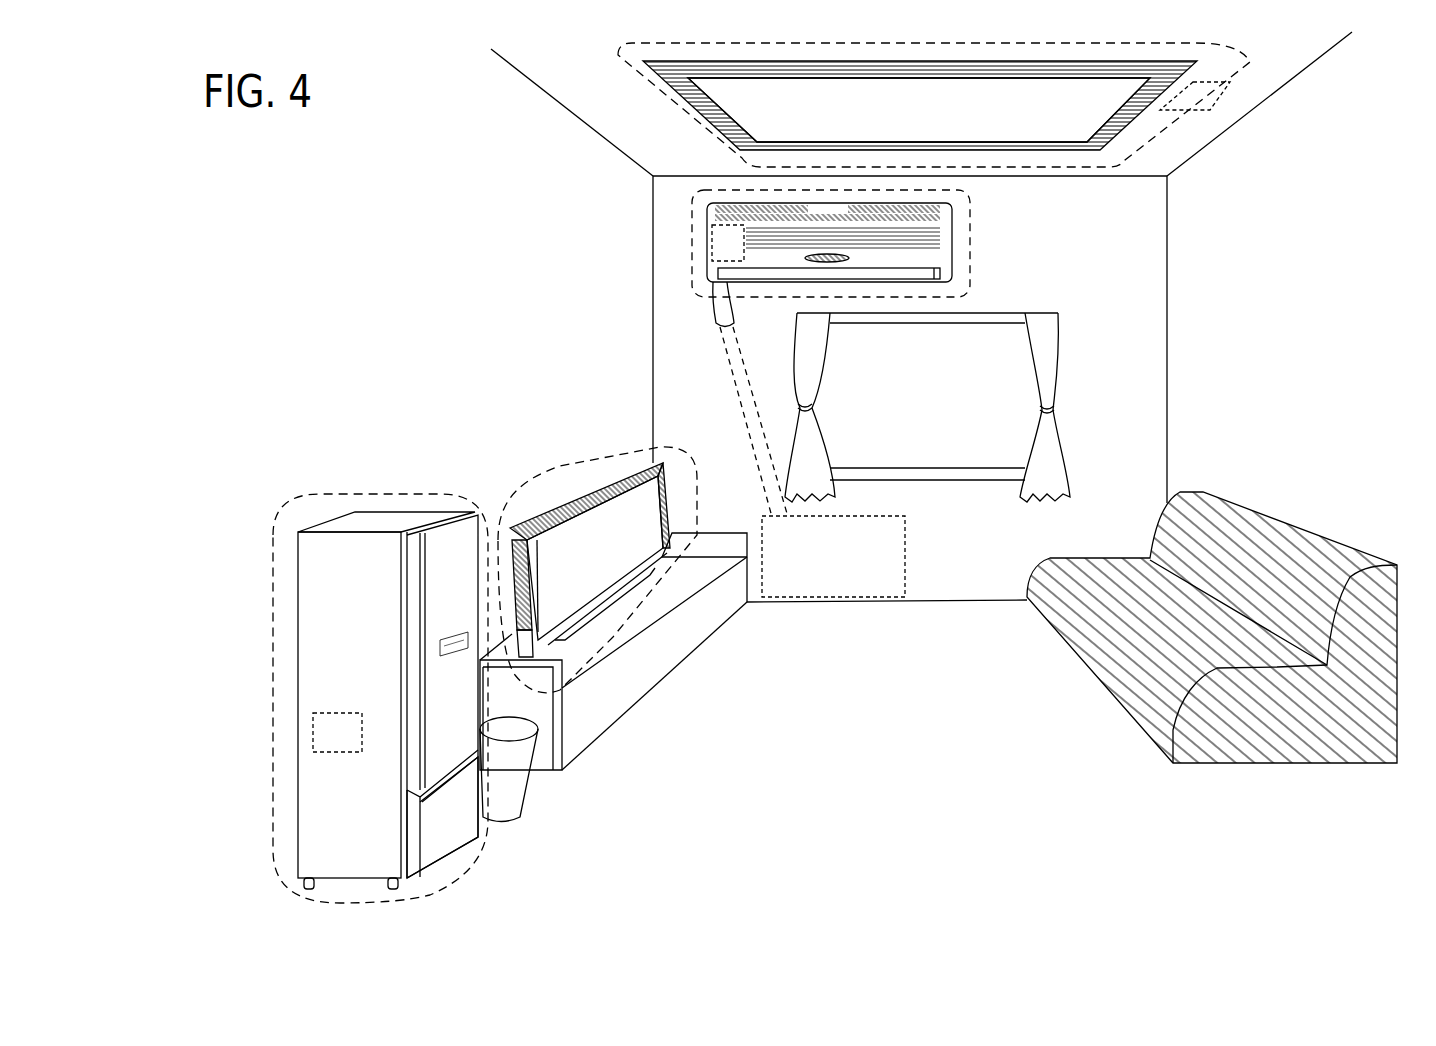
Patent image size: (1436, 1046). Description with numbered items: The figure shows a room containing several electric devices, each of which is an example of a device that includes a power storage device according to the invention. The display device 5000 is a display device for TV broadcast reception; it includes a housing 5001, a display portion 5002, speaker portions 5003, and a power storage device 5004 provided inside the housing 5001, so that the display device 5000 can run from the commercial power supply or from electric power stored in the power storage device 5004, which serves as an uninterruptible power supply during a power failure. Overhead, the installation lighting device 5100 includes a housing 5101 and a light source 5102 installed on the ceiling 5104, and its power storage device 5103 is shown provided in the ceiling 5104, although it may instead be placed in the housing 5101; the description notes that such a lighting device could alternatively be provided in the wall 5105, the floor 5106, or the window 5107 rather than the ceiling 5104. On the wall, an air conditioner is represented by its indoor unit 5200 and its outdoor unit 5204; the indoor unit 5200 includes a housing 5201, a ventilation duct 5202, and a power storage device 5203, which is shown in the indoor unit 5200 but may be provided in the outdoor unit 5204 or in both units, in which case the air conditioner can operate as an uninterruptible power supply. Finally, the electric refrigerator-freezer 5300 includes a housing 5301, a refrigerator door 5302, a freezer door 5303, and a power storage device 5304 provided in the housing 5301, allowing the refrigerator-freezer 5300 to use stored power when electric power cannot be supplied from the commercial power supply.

The display device 5000 is at (555, 534).
The housing 5001 is at (597, 485).
The display portion 5002 is at (603, 457).
The speaker portions 5003 is at (656, 463).
The power storage device 5004 is at (512, 528).
The installation lighting device 5100 is at (900, 110).
The housing 5101 is at (777, 130).
The light source 5102 is at (730, 136).
The power storage device 5103 is at (1210, 98).
The ceiling 5104 is at (595, 79).
The wall 5105 is at (1247, 204).
The floor 5106 is at (981, 658).
The window 5107 is at (1008, 450).
The indoor unit 5200 is at (761, 353).
The housing 5201 is at (713, 235).
The ventilation duct 5202 is at (728, 288).
The power storage device 5203 is at (717, 276).
The outdoor unit 5204 is at (824, 545).
The electric refrigerator-freezer 5300 is at (324, 698).
The housing 5301 is at (312, 618).
The refrigerator door 5302 is at (448, 698).
The freezer door 5303 is at (450, 830).
The power storage device 5304 is at (313, 730).